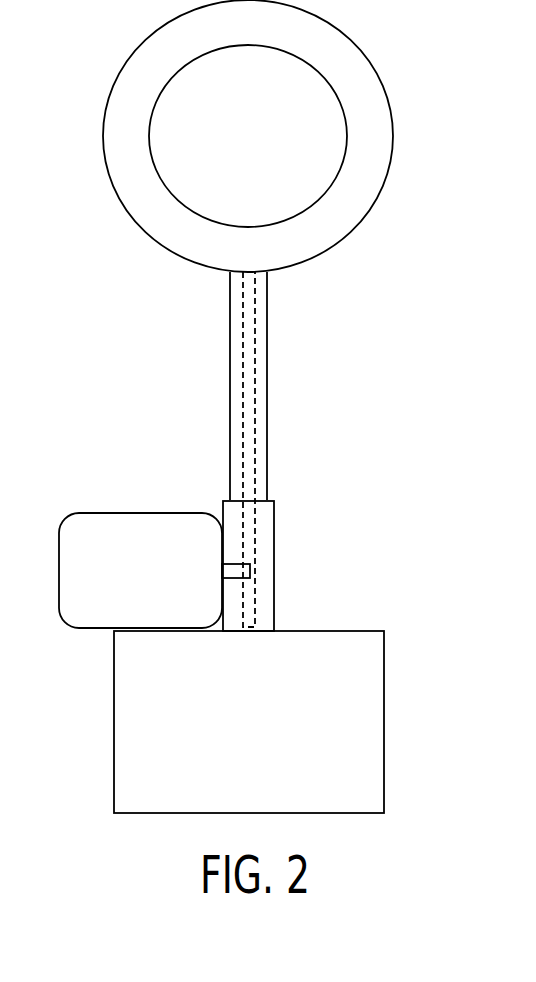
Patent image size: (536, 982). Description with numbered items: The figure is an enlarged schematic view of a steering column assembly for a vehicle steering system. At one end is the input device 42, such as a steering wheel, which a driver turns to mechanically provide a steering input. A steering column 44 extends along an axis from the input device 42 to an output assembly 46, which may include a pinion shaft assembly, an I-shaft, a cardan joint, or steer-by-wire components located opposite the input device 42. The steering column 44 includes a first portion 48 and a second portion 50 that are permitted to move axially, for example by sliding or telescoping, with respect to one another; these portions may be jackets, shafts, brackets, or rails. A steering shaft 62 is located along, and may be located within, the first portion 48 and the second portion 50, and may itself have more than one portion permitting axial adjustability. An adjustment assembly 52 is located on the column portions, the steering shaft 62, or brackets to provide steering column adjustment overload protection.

The input device 42 is at (110, 95).
The steering column 44 is at (143, 423).
The output assembly 46 is at (384, 725).
The first portion 48 is at (268, 407).
The second portion 50 is at (275, 577).
The adjustment assembly 52 is at (95, 629).
The steering shaft 62 is at (257, 349).